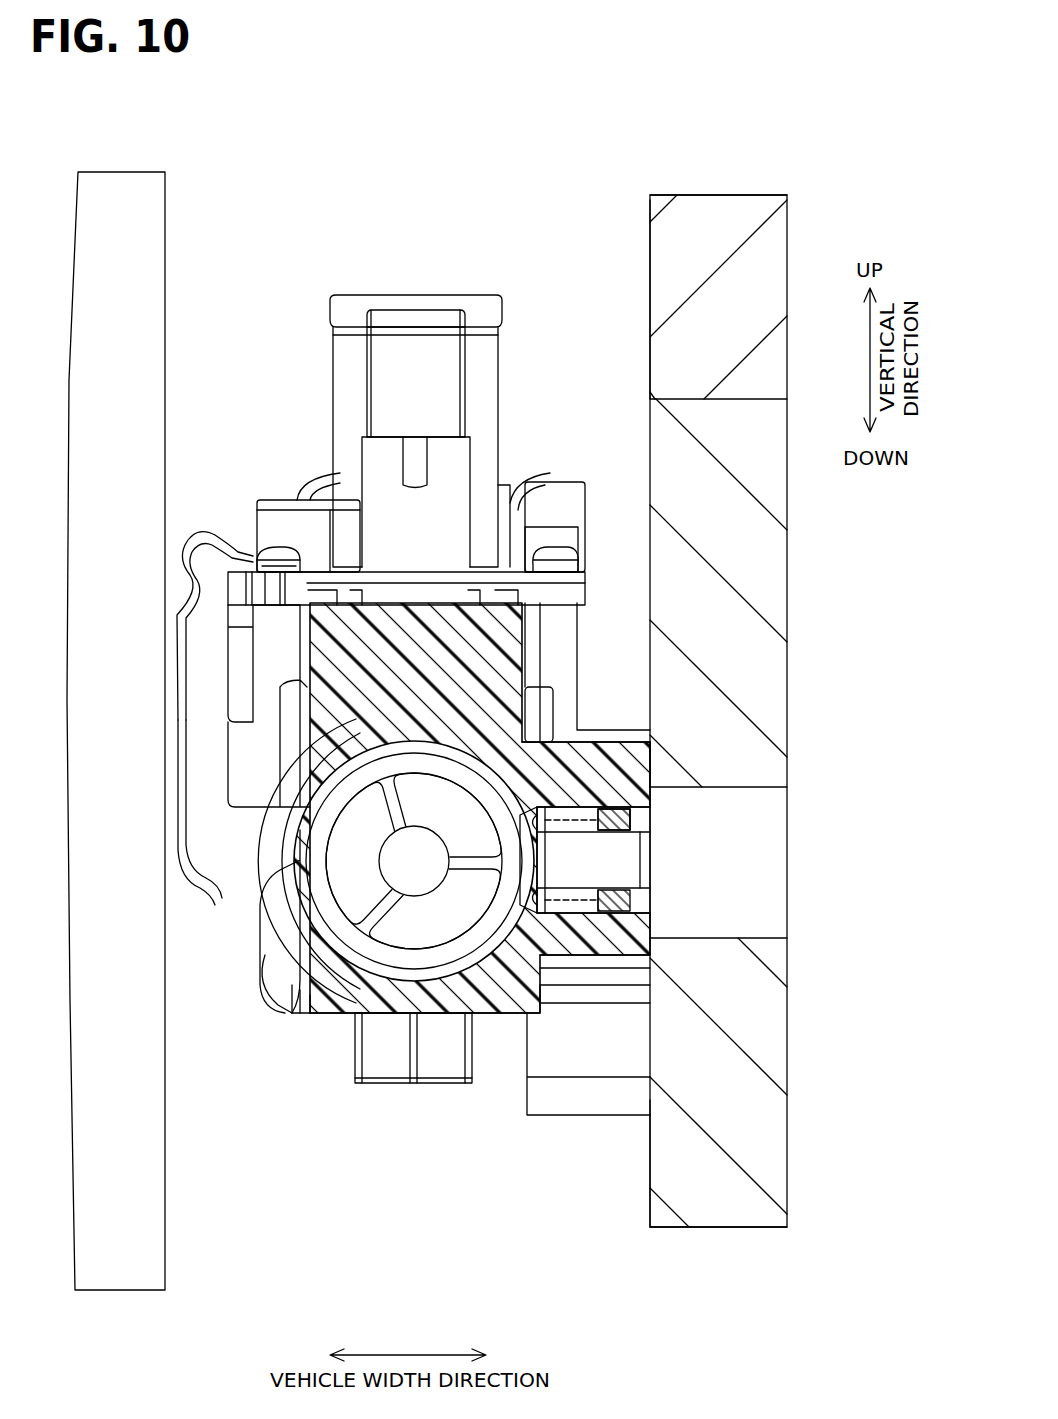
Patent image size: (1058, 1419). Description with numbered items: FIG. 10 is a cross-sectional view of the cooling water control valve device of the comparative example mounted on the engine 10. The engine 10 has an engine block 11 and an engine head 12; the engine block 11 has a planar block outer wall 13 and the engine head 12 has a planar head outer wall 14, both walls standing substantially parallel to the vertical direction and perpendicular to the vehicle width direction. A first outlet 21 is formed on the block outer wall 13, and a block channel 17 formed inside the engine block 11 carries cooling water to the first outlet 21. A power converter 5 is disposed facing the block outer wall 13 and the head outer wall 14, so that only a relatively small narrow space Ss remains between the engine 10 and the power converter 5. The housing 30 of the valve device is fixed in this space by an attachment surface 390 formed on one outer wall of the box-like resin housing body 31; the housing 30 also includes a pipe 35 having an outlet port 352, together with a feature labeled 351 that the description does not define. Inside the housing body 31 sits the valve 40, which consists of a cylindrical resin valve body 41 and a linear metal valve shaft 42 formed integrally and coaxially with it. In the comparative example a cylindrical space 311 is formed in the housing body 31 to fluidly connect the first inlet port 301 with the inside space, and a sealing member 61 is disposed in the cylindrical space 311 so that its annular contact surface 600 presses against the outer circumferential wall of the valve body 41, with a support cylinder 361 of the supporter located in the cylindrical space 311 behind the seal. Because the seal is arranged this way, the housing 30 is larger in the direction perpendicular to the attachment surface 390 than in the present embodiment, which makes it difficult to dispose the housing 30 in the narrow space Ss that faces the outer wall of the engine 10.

The power converter 5 is at (117, 193).
The narrow space Ss is at (233, 340).
The engine 10 is at (701, 195).
The engine head 12 is at (753, 198).
The head outer wall 14 is at (650, 218).
The block channel 17 is at (722, 884).
The block outer wall 13 is at (650, 1196).
The engine block 11 is at (733, 1227).
The first outlet 21 is at (603, 742).
The attachment surface 390 is at (652, 765).
The cylindrical space 311 is at (652, 810).
The first inlet port 301 is at (652, 835).
The sealing member 61 is at (675, 867).
The support cylinder 361 is at (652, 905).
The housing body 31 is at (375, 1000).
The contact surface 600 is at (485, 1013).
The valve shaft 42 is at (405, 880).
The valve 40 is at (432, 955).
The valve body 41 is at (335, 977).
The housing 30 is at (276, 500).
The pipe 35 is at (347, 305).
The connector housing 351 is at (400, 310).
The outlet port 352 is at (433, 295).